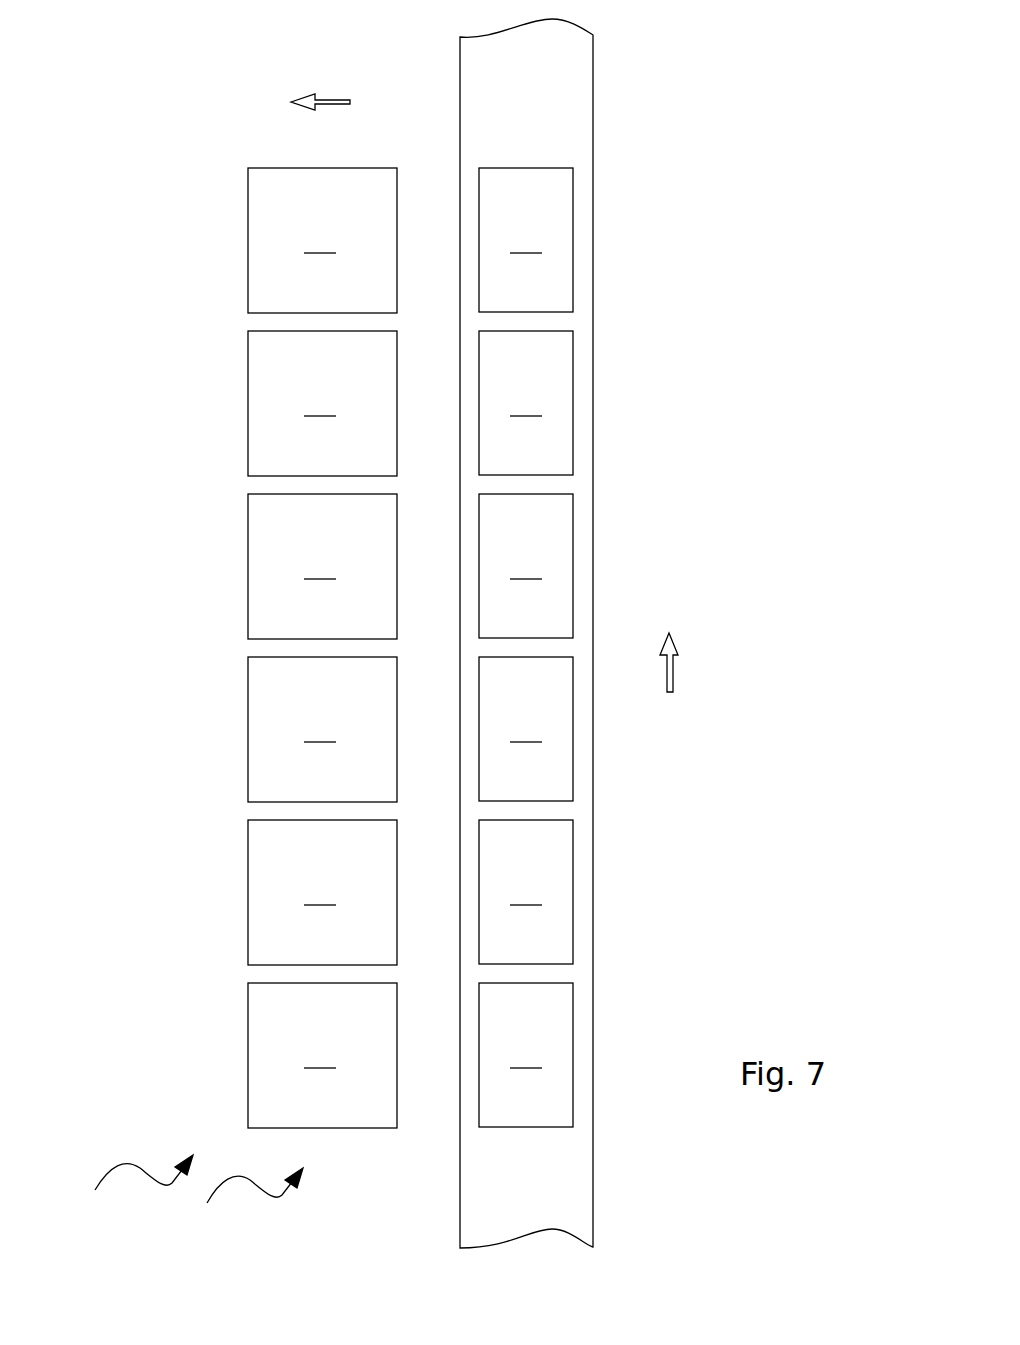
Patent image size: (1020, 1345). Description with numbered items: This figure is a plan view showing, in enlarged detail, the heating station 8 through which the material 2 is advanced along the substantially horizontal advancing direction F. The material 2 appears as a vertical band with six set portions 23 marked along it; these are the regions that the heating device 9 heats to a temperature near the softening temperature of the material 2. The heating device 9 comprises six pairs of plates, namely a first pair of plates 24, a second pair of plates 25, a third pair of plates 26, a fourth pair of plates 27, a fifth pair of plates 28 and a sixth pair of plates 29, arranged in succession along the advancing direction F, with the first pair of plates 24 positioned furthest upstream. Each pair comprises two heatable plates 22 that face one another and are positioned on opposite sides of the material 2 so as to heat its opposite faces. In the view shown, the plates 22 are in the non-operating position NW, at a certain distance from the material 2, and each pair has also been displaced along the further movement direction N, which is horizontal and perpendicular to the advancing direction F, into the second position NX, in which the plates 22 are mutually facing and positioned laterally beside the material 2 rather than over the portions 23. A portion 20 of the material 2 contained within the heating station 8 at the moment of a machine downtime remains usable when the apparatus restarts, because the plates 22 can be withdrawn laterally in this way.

The material 2 is at (459, 112).
The heating station 8 is at (672, 140).
The heating device 9 is at (78, 642).
The portion of the material 20 is at (410, 1152).
The heatable plates 22 is at (237, 648).
The portions of the material 23 is at (526, 647).
The first pair of plates 24 is at (190, 1033).
The second pair of plates 25 is at (190, 870).
The third pair of plates 26 is at (190, 707).
The fourth pair of plates 27 is at (190, 544).
The fifth pair of plates 28 is at (190, 381).
The sixth pair of plates 29 is at (190, 218).
The further movement direction N is at (332, 100).
The advancing direction F is at (667, 676).
The non-operating position NW is at (135, 1189).
The second position NX is at (245, 1203).